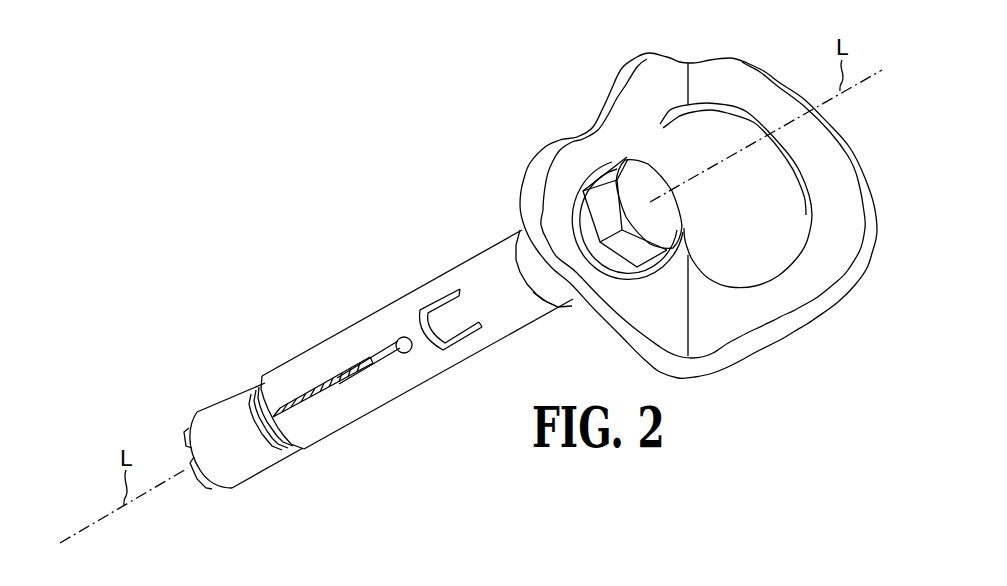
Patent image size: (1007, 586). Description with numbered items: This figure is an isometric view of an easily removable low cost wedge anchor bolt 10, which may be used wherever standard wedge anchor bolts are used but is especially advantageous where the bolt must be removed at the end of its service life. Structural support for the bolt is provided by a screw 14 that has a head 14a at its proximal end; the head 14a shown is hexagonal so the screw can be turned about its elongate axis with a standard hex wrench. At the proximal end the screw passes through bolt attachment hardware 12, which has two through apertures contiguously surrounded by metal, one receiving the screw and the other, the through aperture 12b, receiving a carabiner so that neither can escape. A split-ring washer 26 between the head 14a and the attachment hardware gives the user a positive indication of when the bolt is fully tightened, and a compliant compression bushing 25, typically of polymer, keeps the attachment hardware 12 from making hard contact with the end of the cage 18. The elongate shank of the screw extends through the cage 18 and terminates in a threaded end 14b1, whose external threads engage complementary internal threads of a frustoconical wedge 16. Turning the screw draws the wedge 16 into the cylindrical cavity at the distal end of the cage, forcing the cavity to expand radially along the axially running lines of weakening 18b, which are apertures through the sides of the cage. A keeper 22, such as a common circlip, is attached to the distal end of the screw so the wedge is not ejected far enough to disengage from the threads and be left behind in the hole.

The wedge anchor bolt 10 is at (352, 162).
The bolt attachment hardware 12 is at (590, 111).
The through aperture 12b is at (806, 188).
The screw 14 is at (666, 178).
The head 14a is at (683, 213).
The threaded end 14b1 is at (317, 387).
The wedge 16 is at (206, 395).
The cage 18 is at (424, 390).
The lines of weakening 18b is at (380, 352).
The keeper 22 is at (203, 486).
The compression bushing 25 is at (540, 296).
The split-ring washer 26 is at (570, 206).